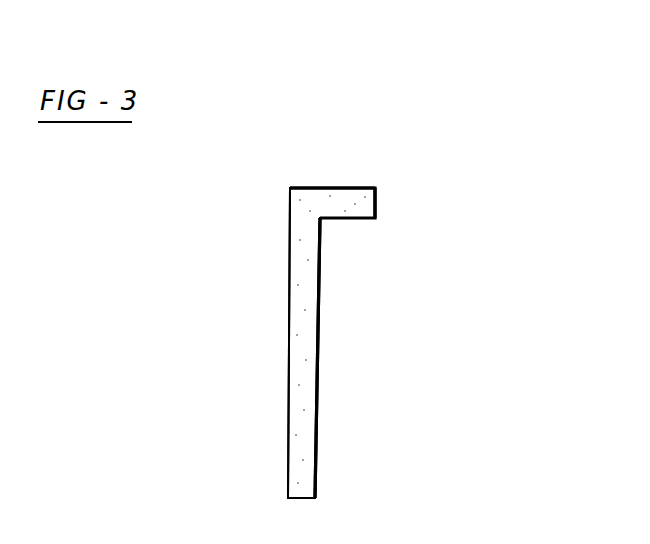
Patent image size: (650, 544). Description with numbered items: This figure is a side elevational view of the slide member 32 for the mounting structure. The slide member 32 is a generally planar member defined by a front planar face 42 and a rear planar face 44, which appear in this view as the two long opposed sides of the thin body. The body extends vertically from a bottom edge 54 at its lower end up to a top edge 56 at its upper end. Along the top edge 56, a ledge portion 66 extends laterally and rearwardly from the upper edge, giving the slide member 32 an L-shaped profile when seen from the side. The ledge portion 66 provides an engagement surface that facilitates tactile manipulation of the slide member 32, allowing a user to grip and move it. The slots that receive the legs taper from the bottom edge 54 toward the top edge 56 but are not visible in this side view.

The slide member 32 is at (286, 183).
The top edge 56 is at (313, 187).
The ledge portion 66 is at (362, 195).
The front planar face 42 is at (292, 350).
The rear planar face 44 is at (320, 337).
The bottom edge 54 is at (303, 498).